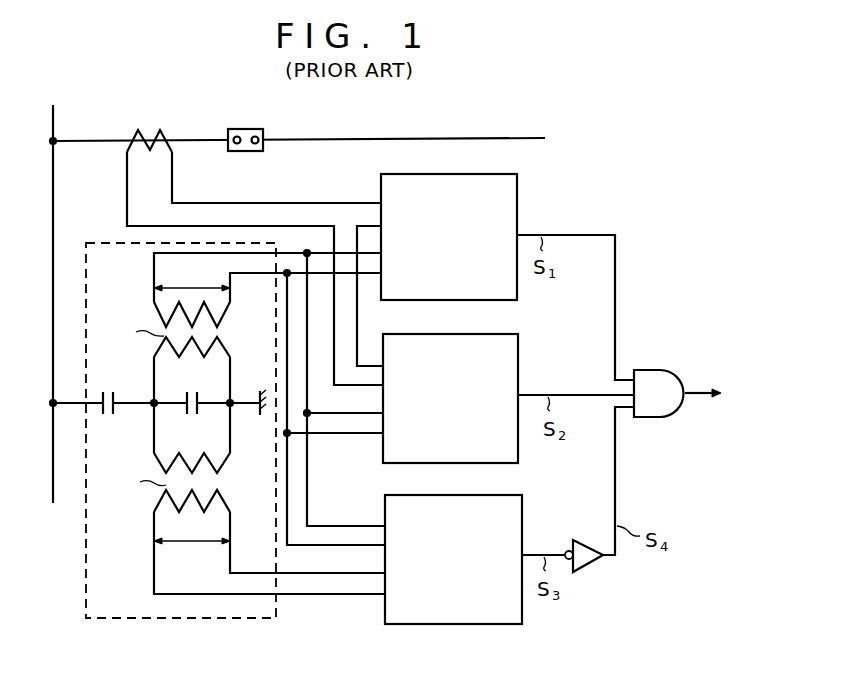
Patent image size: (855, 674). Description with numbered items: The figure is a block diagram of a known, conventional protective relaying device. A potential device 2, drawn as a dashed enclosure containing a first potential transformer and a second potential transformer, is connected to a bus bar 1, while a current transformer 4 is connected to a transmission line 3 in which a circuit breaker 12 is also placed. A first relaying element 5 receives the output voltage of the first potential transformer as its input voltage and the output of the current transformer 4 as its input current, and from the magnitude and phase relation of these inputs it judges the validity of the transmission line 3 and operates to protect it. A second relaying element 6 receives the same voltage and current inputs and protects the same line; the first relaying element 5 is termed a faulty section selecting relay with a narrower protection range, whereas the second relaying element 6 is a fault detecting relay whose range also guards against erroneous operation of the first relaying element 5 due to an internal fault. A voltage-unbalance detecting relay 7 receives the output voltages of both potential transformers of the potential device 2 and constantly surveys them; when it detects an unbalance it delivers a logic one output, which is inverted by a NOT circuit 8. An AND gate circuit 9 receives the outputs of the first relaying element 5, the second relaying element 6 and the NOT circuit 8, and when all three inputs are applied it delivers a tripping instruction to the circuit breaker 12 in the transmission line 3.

The bus bar 1 is at (55, 190).
The potential device 2 is at (160, 619).
The transmission line 3 is at (368, 135).
The current transformer 4 is at (153, 130).
The first relaying element 5 is at (518, 191).
The second relaying element 6 is at (518, 353).
The voltage-unbalance detecting relay 7 is at (522, 511).
The NOT circuit 8 is at (593, 540).
The AND gate circuit 9 is at (660, 368).
The circuit breaker 12 is at (242, 127).